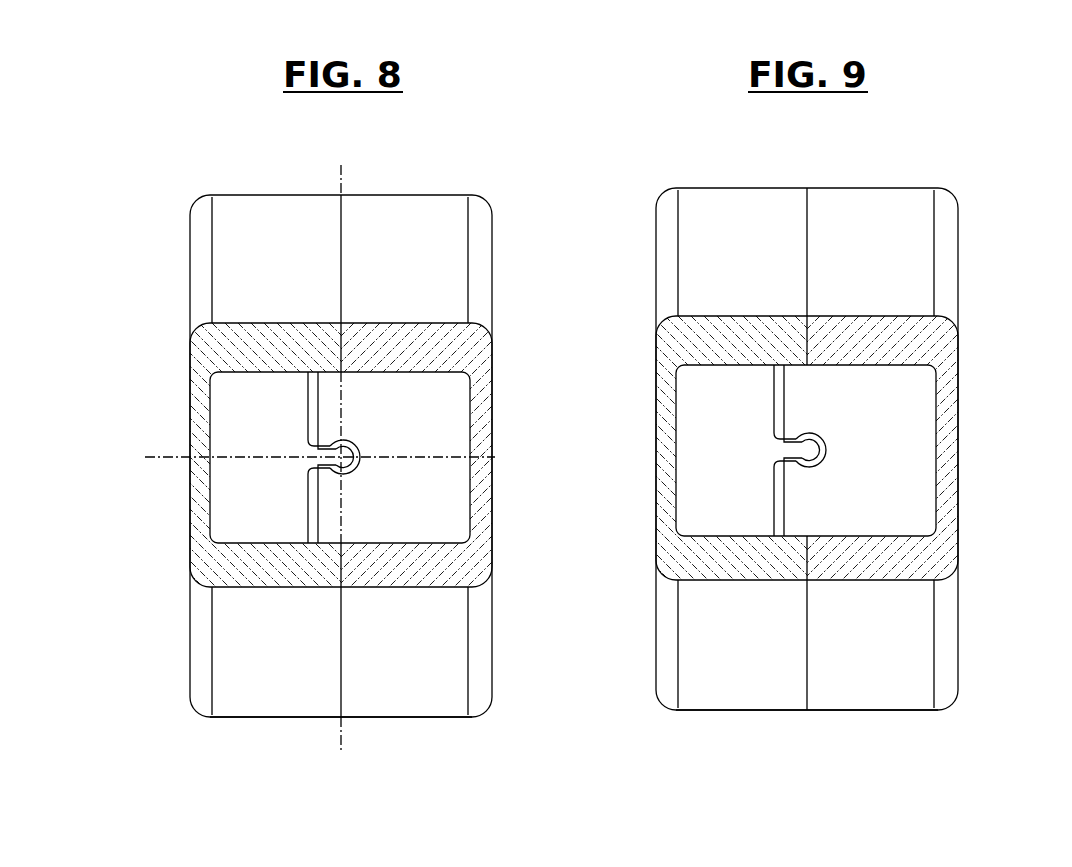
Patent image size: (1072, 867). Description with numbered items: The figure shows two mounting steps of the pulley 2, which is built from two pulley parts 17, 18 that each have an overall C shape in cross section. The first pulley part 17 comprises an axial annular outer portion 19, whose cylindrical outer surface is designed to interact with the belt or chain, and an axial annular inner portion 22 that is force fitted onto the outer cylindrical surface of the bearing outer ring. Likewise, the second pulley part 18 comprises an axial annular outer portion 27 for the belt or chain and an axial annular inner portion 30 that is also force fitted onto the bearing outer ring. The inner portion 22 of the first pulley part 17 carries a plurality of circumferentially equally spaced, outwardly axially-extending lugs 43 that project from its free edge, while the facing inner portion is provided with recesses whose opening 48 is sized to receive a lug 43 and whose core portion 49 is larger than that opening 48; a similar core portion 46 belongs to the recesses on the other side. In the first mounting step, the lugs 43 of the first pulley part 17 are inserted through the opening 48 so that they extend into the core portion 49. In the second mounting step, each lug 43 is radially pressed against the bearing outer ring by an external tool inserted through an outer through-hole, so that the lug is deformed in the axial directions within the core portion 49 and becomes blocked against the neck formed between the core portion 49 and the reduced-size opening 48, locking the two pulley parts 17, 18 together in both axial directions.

In FIG. 8, the pulley 2 is at (267, 733).
In FIG. 9, the pulley 2 is at (732, 473).
In FIG. 8, the first pulley part 17 is at (195, 286).
In FIG. 9, the first pulley part 17 is at (760, 449).
In FIG. 8, the second pulley part 18 is at (482, 640).
In FIG. 9, the second pulley part 18 is at (859, 623).
In FIG. 8, the axial annular outer portion 19 is at (232, 198).
In FIG. 9, the axial annular outer portion 19 is at (748, 259).
In FIG. 8, the axial annular inner portion 22 is at (217, 537).
In FIG. 9, the axial annular inner portion 22 is at (732, 448).
In FIG. 8, the axial annular outer portion 27 is at (450, 718).
In FIG. 9, the axial annular outer portion 27 is at (863, 732).
In FIG. 8, the axial annular inner portion 30 is at (462, 383).
In FIG. 9, the axial annular inner portion 30 is at (860, 449).
In FIG. 8, the lug 43 is at (352, 480).
In FIG. 9, the lug 43 is at (687, 497).
In FIG. 8, the core portion 46 is at (90, 403).
In FIG. 9, the core portion 46 is at (664, 450).
In FIG. 8, the opening 48 is at (325, 465).
In FIG. 9, the opening 48 is at (691, 459).
In FIG. 8, the core portion 49 is at (338, 432).
In FIG. 9, the core portion 49 is at (680, 403).